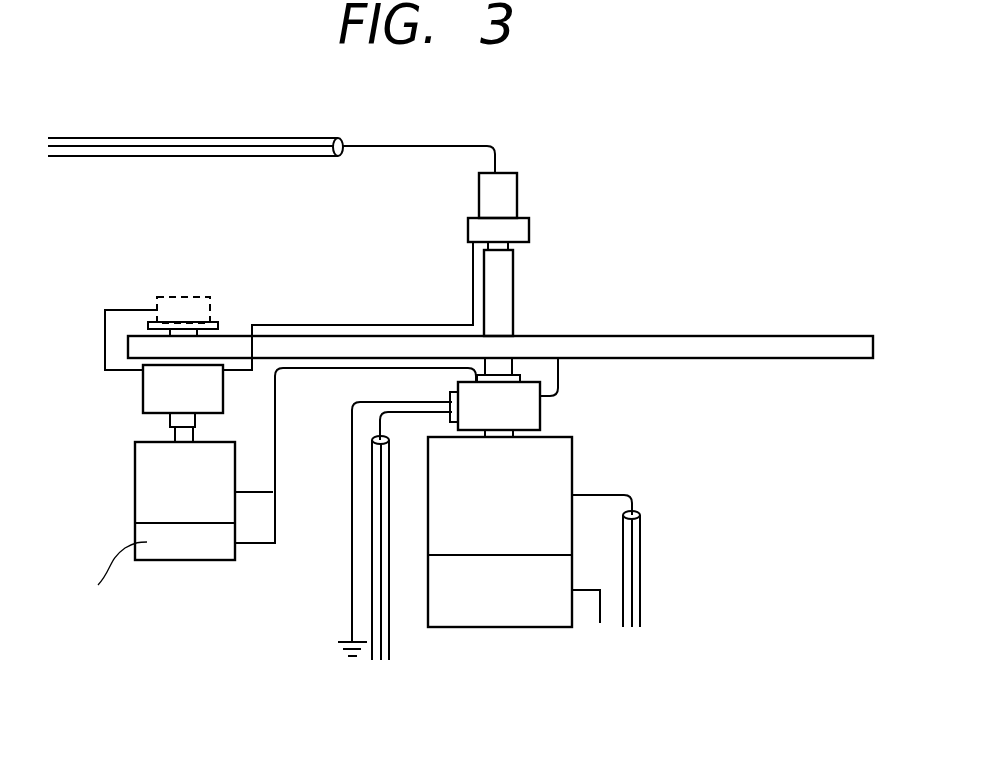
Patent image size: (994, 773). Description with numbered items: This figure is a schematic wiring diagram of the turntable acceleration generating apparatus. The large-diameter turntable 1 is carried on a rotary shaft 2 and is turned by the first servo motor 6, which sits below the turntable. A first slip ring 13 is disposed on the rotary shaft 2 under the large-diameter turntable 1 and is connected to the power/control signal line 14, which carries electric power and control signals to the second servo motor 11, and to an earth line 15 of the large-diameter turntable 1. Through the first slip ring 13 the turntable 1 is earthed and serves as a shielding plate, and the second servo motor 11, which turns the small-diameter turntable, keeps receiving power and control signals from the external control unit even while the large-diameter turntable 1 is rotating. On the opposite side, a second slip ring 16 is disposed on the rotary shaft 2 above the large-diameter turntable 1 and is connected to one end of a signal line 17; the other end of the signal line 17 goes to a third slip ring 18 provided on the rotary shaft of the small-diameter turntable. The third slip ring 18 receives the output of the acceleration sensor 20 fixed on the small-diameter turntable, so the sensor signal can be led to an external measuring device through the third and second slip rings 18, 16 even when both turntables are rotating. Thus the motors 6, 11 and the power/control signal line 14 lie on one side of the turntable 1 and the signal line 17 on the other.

The large-diameter turntable 1 is at (810, 346).
The rotary shaft 2 is at (505, 287).
The first servo motor 6 is at (573, 613).
The second servo motor 11 is at (180, 562).
The first slip ring 13 is at (530, 417).
The power/control signal line 14 is at (277, 457).
The earth line 15 is at (560, 381).
The second slip ring 16 is at (510, 198).
The signal line 17 is at (473, 268).
The third slip ring 18 is at (152, 390).
The acceleration sensor 20 is at (152, 298).